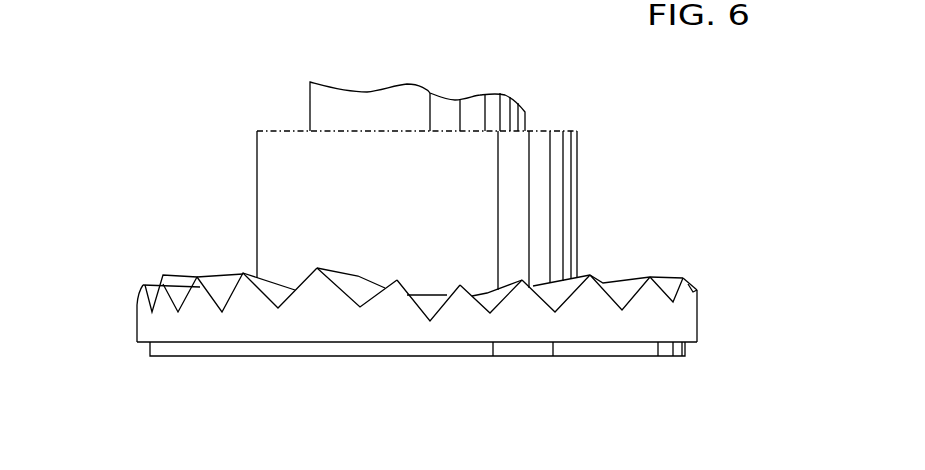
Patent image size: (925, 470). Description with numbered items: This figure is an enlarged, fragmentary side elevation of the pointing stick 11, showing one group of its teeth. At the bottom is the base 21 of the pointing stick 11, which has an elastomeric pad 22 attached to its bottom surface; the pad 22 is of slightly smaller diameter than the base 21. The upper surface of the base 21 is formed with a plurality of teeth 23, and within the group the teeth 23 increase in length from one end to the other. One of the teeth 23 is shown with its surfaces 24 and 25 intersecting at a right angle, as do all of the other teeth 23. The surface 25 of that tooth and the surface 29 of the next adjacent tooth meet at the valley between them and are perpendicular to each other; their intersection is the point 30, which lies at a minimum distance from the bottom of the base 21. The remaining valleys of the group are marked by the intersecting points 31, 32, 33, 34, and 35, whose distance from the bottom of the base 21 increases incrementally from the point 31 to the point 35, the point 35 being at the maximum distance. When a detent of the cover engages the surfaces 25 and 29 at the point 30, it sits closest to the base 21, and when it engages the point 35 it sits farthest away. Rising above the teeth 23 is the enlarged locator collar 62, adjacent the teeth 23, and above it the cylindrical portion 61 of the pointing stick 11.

The pointing stick 11 is at (577, 223).
The base 21 is at (137, 335).
The elastomeric pad 22 is at (150, 349).
The teeth 23 is at (397, 280).
The surface 24 is at (383, 288).
The surface 25 is at (410, 295).
The surface 29 is at (432, 296).
The point 30 is at (430, 321).
The intersecting point 31 is at (490, 313).
The intersecting point 32 is at (555, 312).
The intersecting point 33 is at (622, 310).
The intersecting point 34 is at (650, 278).
The intersecting point 35 is at (693, 299).
The cylindrical portion 61 is at (525, 117).
The locator collar 62 is at (580, 150).